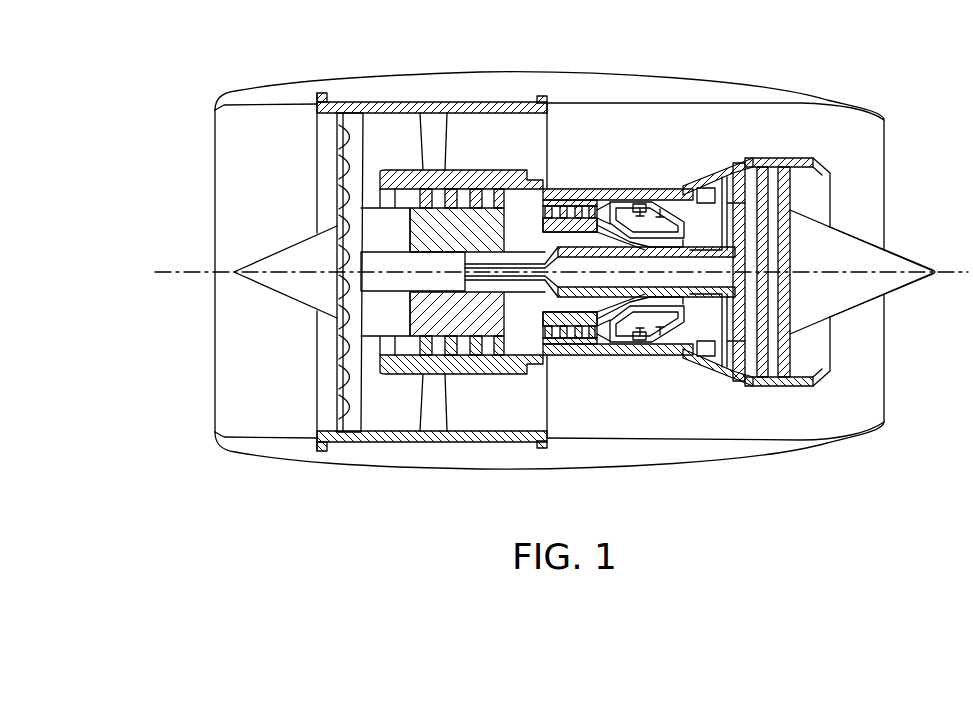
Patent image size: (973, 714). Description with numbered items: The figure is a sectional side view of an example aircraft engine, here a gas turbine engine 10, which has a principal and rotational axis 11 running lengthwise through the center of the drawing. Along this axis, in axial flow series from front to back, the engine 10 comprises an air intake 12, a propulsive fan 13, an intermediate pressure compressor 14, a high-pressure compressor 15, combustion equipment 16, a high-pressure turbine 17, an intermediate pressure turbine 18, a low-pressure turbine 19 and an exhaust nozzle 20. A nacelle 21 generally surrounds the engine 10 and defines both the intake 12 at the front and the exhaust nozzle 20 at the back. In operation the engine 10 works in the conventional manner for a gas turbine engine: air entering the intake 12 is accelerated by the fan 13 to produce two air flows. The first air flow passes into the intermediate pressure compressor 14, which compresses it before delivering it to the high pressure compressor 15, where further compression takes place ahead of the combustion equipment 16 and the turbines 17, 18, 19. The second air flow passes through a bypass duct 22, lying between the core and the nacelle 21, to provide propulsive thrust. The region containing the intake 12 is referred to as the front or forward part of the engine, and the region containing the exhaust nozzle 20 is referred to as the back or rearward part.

The gas turbine engine 10 is at (181, 140).
The principal and rotational axis 11 is at (226, 270).
The air intake 12 is at (278, 106).
The propulsive fan 13 is at (338, 382).
The intermediate pressure compressor 14 is at (447, 370).
The high-pressure compressor 15 is at (584, 189).
The combustion equipment 16 is at (648, 338).
The high-pressure turbine 17 is at (688, 357).
The intermediate pressure turbine 18 is at (713, 174).
The low-pressure turbine 19 is at (741, 370).
The exhaust nozzle 20 is at (888, 407).
The nacelle 21 is at (578, 85).
The bypass duct 22 is at (514, 153).